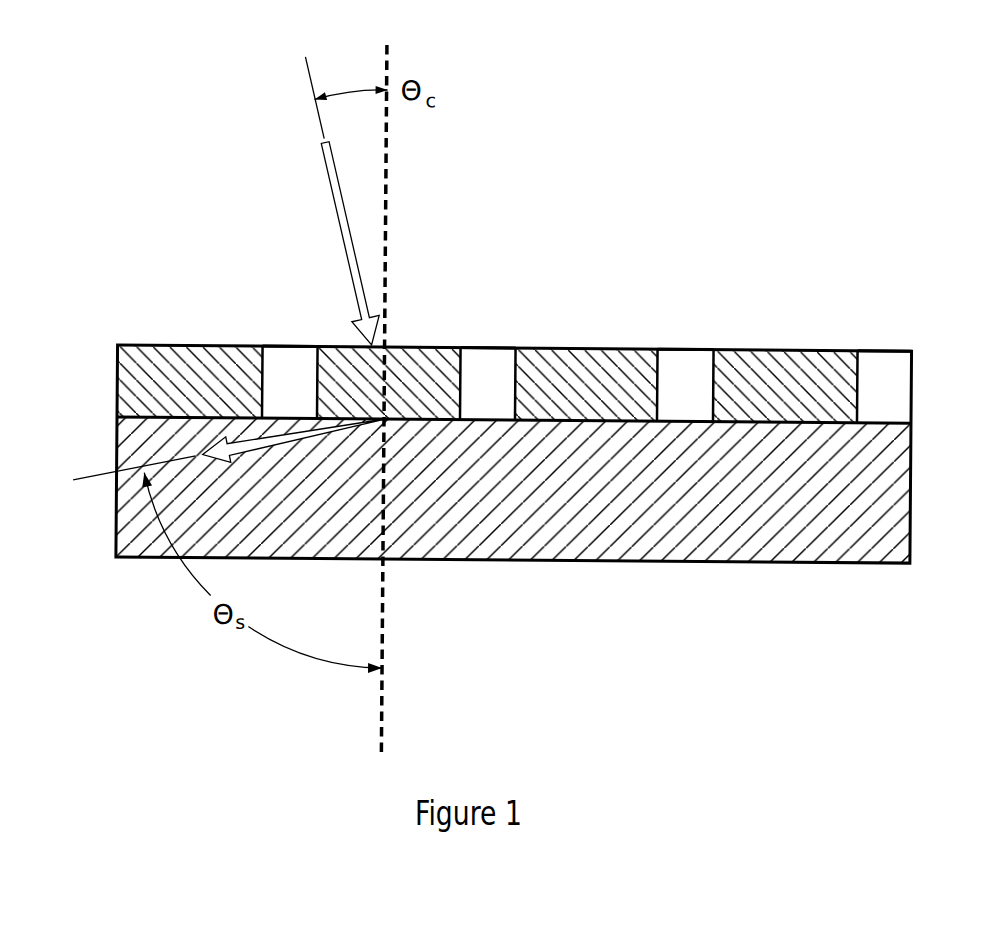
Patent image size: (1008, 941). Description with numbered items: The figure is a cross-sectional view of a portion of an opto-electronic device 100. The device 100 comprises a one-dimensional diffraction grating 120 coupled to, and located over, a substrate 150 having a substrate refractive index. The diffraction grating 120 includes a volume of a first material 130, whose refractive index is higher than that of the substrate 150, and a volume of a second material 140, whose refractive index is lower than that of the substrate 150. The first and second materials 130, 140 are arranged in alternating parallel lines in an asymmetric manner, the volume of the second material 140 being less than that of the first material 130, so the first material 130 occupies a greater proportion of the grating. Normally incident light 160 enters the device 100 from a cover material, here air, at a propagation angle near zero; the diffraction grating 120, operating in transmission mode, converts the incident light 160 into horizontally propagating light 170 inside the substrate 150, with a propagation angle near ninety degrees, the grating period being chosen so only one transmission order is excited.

The opto-electronic device 100 is at (504, 270).
The diffraction grating 120 is at (470, 337).
The first material 130 is at (585, 347).
The second material 140 is at (684, 347).
The substrate 150 is at (117, 460).
The normally incident light 160 is at (333, 211).
The horizontally propagating light 170 is at (290, 429).